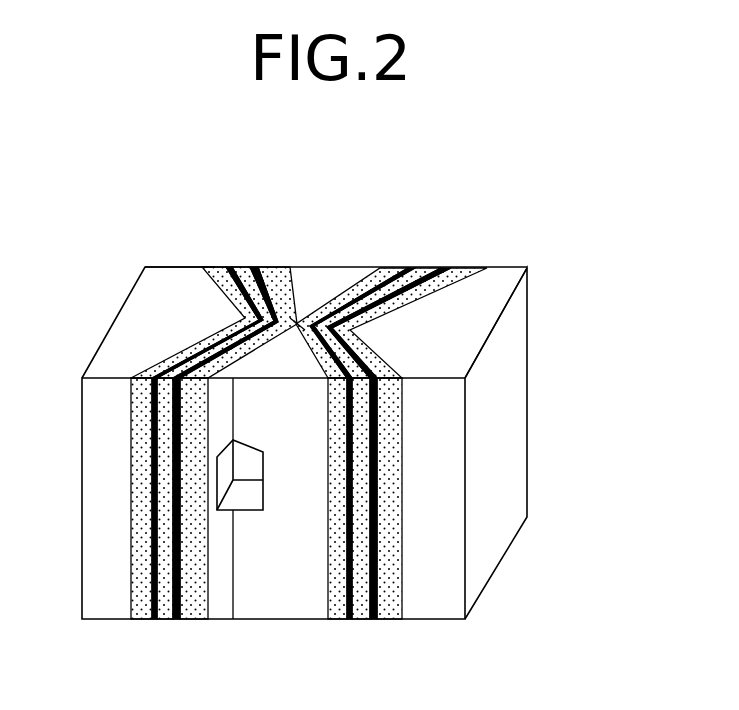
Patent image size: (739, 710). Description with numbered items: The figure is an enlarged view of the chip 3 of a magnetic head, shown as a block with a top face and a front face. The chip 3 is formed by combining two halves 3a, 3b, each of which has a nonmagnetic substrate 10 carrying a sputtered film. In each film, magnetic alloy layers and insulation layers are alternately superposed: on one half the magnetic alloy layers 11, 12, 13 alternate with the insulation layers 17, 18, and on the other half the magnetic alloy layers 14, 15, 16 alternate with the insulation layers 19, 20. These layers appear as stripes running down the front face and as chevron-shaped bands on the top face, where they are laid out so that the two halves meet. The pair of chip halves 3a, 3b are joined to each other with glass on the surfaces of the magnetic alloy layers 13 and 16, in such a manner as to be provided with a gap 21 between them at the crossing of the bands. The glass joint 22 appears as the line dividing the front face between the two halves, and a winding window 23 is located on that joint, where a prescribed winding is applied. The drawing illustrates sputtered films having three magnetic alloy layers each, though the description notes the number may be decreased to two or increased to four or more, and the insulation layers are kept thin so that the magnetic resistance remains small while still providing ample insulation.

The chip 3 is at (552, 298).
The chip half 3a is at (511, 258).
The chip half 3b is at (179, 258).
The nonmagnetic substrate 10 is at (118, 497).
The magnetic alloy layer 11 is at (391, 620).
The magnetic alloy layer 12 is at (361, 620).
The magnetic alloy layer 13 is at (335, 620).
The magnetic alloy layer 14 is at (140, 620).
The magnetic alloy layer 15 is at (165, 620).
The magnetic alloy layer 16 is at (196, 620).
The insulation layer 17 is at (455, 266).
The insulation layer 18 is at (406, 266).
The insulation layer 19 is at (238, 266).
The insulation layer 20 is at (288, 300).
The gap 21 is at (305, 305).
The glass joint 22 is at (268, 620).
The winding window 23 is at (243, 500).